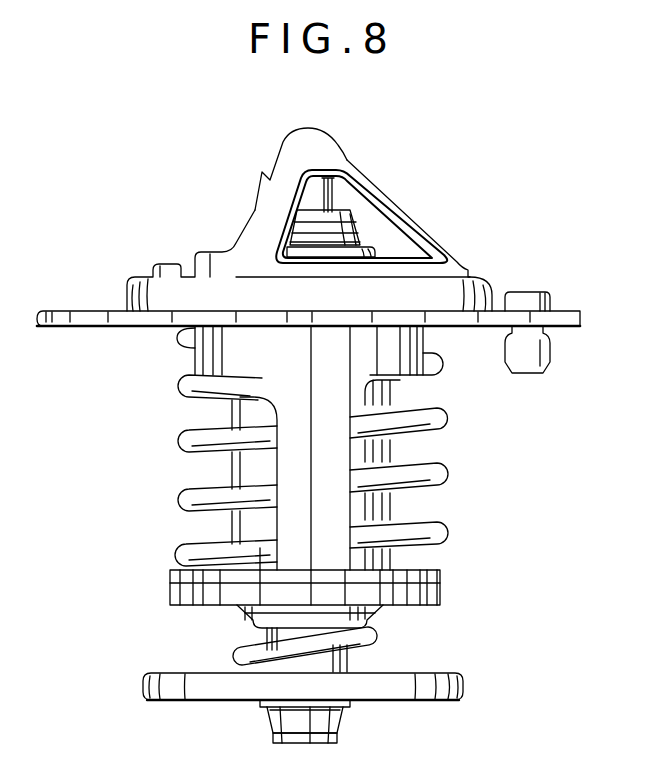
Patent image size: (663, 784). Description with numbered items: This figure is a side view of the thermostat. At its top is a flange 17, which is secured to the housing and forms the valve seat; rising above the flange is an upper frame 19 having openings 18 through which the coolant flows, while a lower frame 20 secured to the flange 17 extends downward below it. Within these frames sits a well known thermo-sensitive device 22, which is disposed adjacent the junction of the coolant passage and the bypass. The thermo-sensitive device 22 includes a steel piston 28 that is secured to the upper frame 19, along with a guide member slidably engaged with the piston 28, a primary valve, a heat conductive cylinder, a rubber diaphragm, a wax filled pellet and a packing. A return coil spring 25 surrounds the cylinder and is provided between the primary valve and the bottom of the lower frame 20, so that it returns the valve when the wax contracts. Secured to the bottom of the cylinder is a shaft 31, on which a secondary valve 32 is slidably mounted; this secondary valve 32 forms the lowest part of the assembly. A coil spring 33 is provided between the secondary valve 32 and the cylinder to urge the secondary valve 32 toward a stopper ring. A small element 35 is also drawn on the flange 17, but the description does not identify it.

The flange 17 is at (101, 311).
The openings 18 is at (403, 235).
The upper frame 19 is at (275, 204).
The lower frame 20 is at (190, 353).
The thermo-sensitive device 22 is at (252, 467).
The return coil spring 25 is at (438, 476).
The steel piston 28 is at (335, 195).
The shaft 31 is at (335, 663).
The secondary valve 32 is at (425, 702).
The coil spring 33 is at (240, 654).
The jiggle pin 35 is at (538, 362).